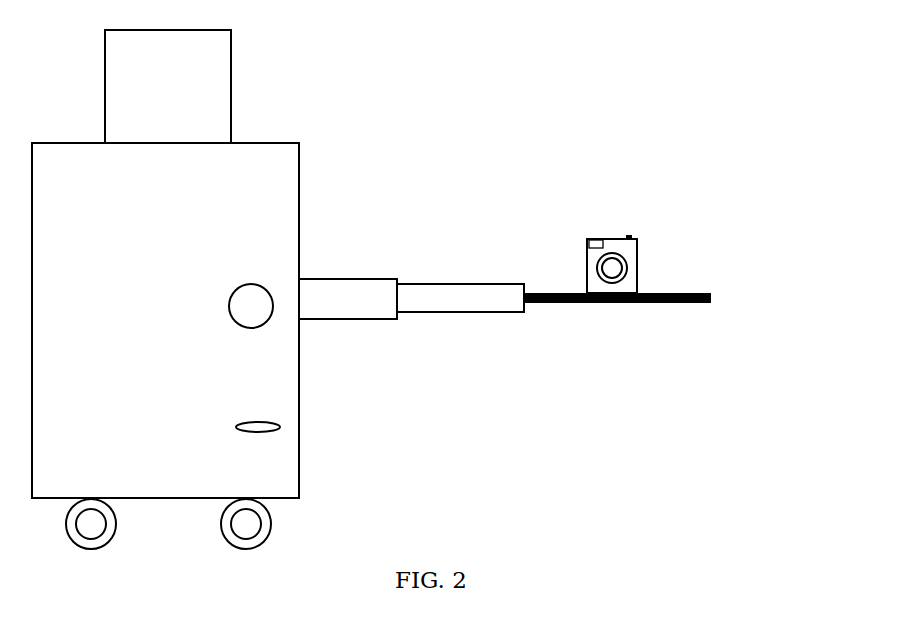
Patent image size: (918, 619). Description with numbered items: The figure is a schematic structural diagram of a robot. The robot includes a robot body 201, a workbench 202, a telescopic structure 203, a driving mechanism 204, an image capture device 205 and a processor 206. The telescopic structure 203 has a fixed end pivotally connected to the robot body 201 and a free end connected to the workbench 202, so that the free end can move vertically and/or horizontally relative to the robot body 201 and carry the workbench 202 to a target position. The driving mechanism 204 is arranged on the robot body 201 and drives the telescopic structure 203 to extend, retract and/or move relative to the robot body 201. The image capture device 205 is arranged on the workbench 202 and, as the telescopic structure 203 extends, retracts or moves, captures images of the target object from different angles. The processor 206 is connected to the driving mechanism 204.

The robot body 201 is at (262, 141).
The workbench 202 is at (671, 293).
The telescopic structure 203 is at (352, 277).
The driving mechanism 204 is at (268, 287).
The image capture device 205 is at (610, 239).
The processor 206 is at (267, 420).